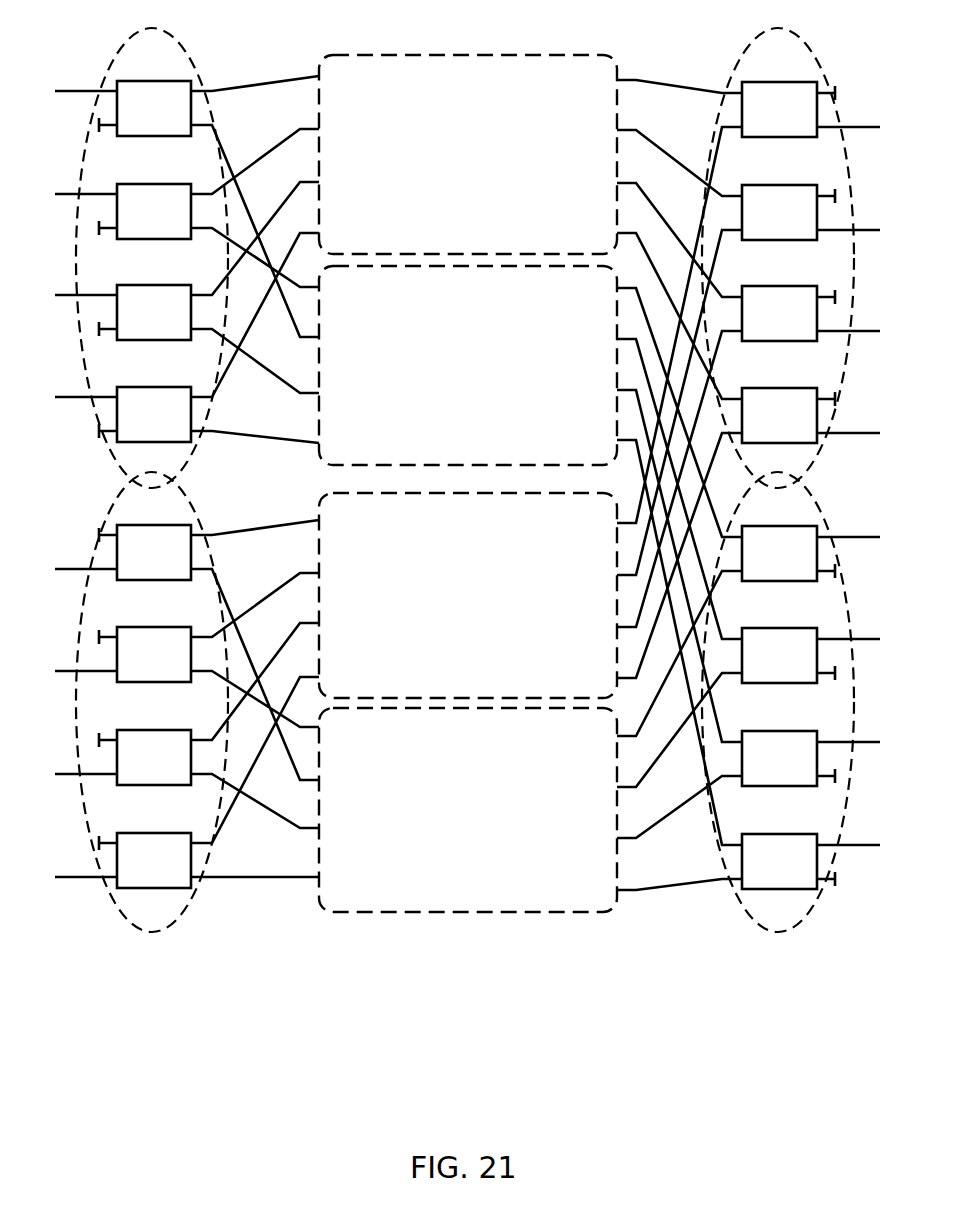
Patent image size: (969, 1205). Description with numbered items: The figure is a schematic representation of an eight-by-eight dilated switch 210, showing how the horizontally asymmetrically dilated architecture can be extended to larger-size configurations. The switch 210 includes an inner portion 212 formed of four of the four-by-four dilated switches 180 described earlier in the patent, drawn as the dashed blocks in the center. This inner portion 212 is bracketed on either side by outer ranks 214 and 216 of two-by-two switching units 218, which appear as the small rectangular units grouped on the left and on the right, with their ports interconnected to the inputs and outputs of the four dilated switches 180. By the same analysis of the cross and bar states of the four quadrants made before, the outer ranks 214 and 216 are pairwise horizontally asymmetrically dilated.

The 4×4 dilated switch 180 is at (440, 55).
The 8×8 dilated switch 210 is at (468, 539).
The inner portion 212 is at (466, 505).
The outer rank 214 is at (150, 942).
The outer rank 216 is at (774, 943).
The 2×2 switching unit 218 is at (162, 80).